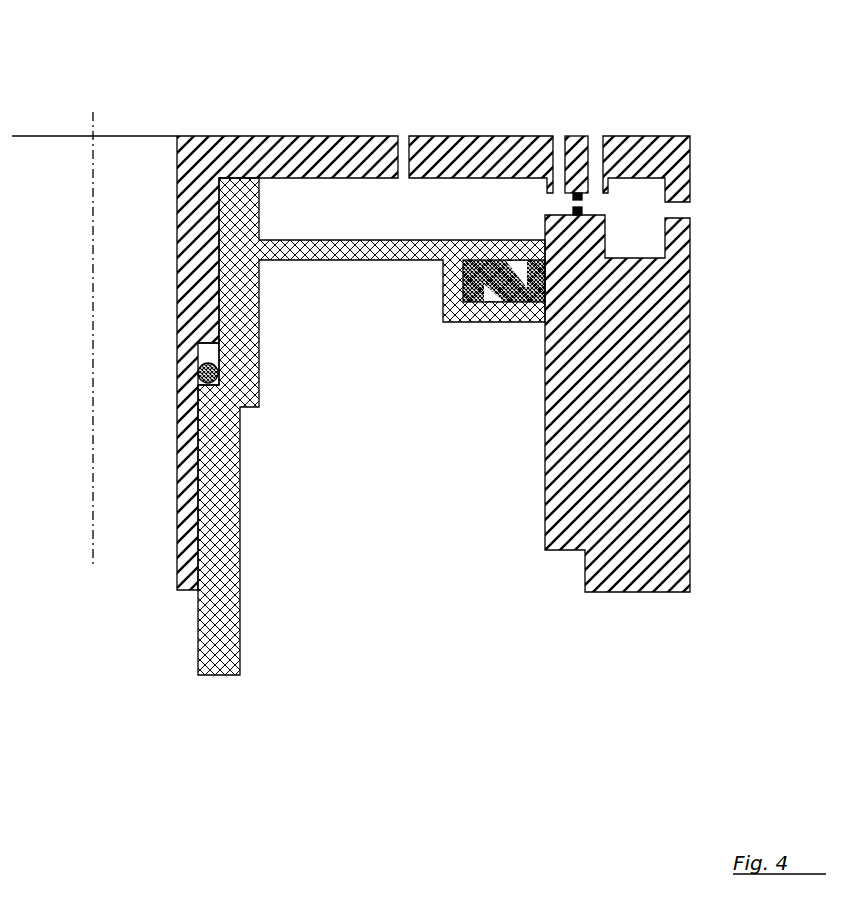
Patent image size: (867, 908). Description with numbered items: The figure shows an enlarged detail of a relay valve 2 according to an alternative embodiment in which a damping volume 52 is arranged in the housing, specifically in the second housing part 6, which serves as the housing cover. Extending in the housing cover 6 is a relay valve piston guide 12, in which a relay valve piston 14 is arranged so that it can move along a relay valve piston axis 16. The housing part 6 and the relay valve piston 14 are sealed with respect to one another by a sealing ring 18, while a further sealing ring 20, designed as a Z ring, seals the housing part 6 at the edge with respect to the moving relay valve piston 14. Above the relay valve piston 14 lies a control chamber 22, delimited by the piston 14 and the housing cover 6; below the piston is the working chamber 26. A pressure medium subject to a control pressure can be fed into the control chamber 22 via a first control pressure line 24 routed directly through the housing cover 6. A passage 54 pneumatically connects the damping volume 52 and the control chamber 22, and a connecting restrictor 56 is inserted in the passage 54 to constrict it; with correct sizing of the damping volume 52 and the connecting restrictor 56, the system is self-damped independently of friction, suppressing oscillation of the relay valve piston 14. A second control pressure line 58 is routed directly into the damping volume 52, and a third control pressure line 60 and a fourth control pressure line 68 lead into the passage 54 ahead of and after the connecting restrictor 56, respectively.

The relay valve 2 is at (228, 92).
The second housing part 6 is at (280, 148).
The relay valve piston guide 12 is at (177, 572).
The relay valve piston 14 is at (230, 398).
The relay valve piston axis 16 is at (93, 202).
The sealing ring 18 is at (200, 371).
The further sealing ring 20 is at (550, 287).
The control chamber 22 is at (290, 221).
The control pressure line 24 is at (404, 150).
The working chamber 26 is at (337, 364).
The damping volume 52 is at (624, 226).
The passage 54 is at (556, 205).
The connecting restrictor 56 is at (573, 193).
The second control pressure line 58 is at (680, 214).
The third control pressure line 60 is at (558, 160).
The fourth control pressure line 68 is at (596, 157).